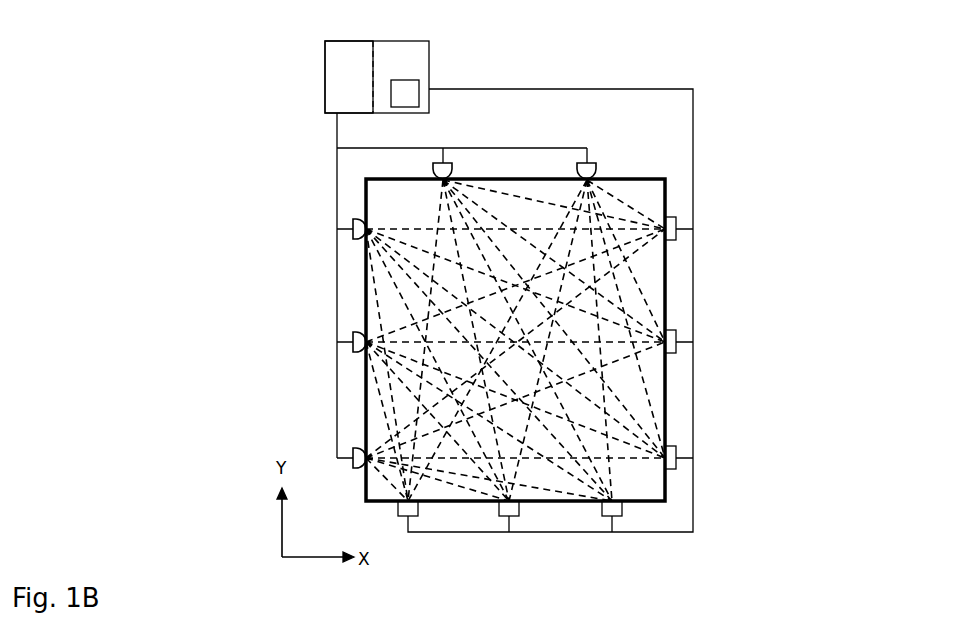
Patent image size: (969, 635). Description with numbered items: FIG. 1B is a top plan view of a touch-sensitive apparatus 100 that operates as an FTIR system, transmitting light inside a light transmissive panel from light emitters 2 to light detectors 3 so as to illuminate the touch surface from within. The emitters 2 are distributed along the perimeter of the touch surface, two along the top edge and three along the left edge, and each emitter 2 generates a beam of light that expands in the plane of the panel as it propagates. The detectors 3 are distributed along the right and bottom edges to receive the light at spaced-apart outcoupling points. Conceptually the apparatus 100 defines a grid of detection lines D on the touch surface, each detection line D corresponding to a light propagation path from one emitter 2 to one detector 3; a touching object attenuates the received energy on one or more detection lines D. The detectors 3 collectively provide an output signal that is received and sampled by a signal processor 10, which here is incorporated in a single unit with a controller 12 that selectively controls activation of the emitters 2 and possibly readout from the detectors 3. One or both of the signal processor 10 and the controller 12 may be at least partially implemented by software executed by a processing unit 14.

The touch-sensitive apparatus 100 is at (752, 100).
The signal processor 10 is at (397, 41).
The controller 12 is at (325, 61).
The processing unit 14 is at (410, 80).
The light emitters 2 is at (443, 158).
The light detectors 3 is at (676, 458).
The detection lines D is at (618, 199).